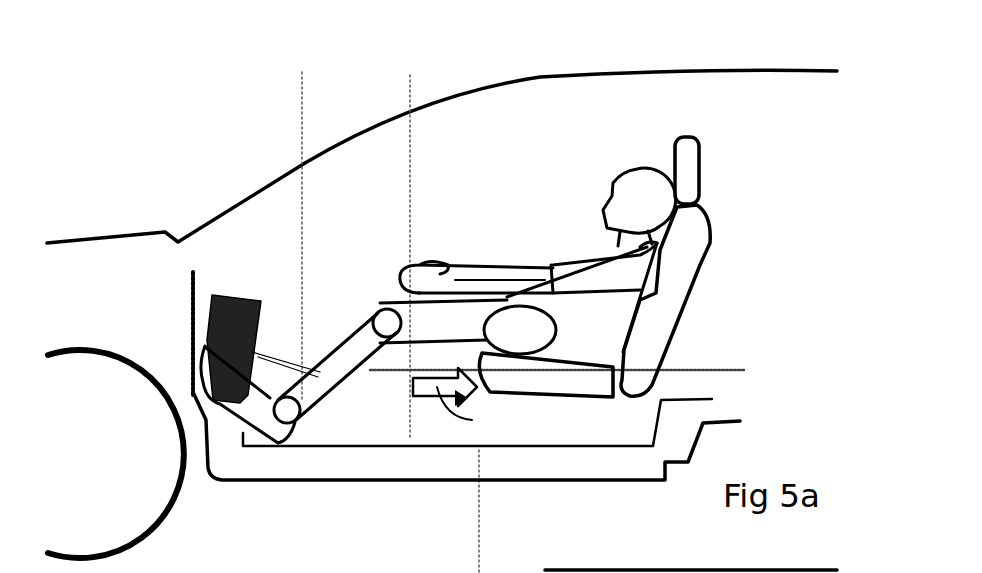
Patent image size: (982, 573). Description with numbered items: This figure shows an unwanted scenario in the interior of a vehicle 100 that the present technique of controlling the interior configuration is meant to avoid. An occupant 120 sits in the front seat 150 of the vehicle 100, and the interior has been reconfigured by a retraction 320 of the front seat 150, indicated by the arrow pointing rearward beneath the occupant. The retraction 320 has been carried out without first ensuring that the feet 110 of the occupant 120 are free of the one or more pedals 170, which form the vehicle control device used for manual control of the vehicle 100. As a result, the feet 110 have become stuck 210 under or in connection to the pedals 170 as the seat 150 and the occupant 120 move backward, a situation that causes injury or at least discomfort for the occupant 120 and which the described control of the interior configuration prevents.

The vehicle 100 is at (209, 92).
The feet 110 is at (297, 347).
The occupant 120 is at (548, 187).
The front seat 150 is at (700, 296).
The pedals 170 is at (202, 384).
The stuck 210 is at (247, 410).
The retraction 320 is at (469, 397).